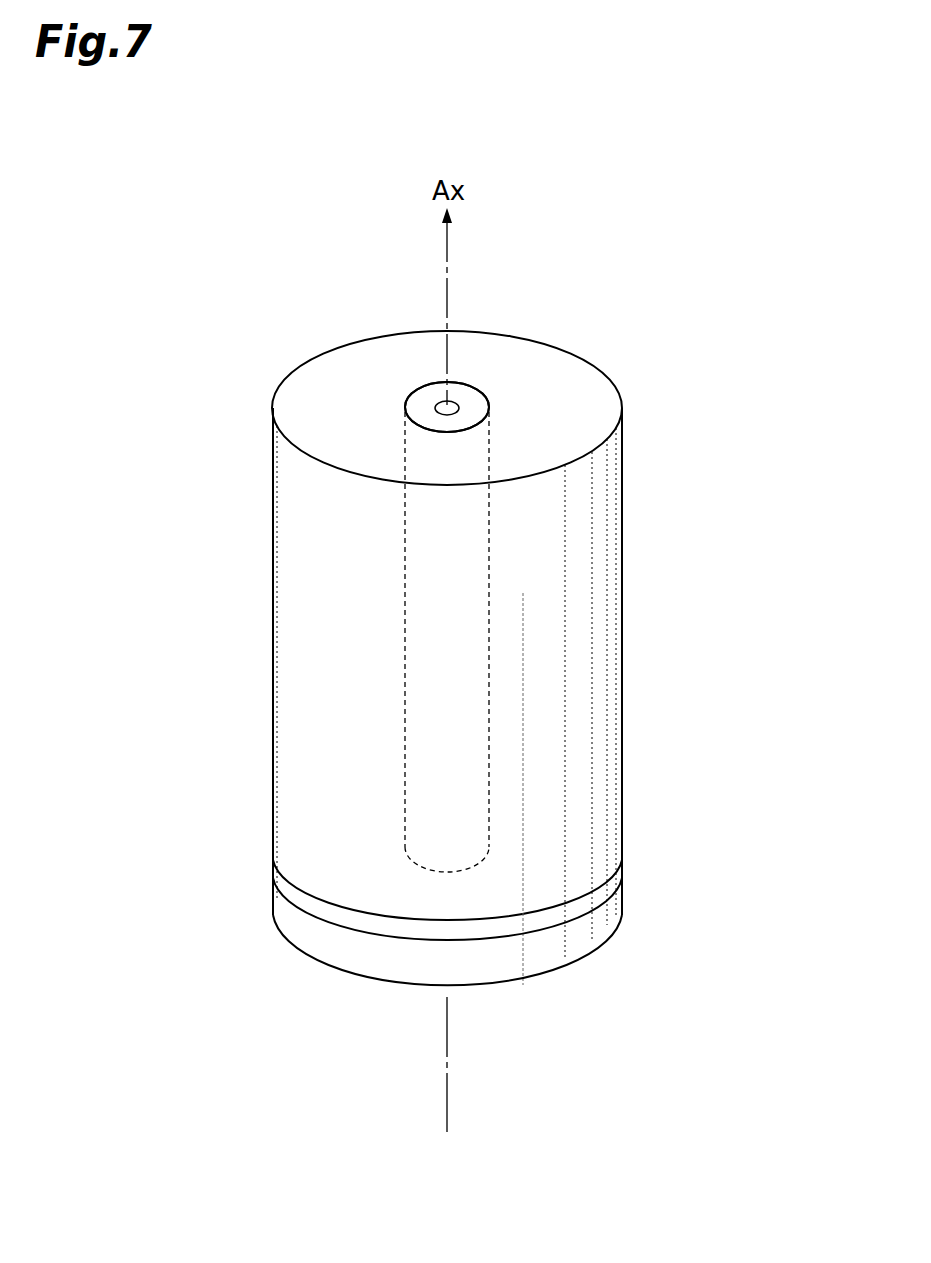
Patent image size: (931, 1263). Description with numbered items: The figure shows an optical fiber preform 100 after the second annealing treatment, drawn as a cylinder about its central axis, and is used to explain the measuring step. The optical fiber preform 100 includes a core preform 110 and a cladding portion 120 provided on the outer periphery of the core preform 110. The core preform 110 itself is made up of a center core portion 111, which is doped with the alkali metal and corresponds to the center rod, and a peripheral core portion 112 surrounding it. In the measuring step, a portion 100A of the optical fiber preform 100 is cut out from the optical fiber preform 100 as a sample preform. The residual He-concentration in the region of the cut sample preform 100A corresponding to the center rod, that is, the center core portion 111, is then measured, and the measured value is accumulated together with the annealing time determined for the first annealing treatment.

The optical fiber preform 100 is at (532, 658).
The portion of the optical fiber preform 100A is at (332, 958).
The core preform 110 is at (468, 392).
The center core portion 111 is at (440, 403).
The peripheral core portion 112 is at (420, 410).
The cladding portion 120 is at (567, 370).